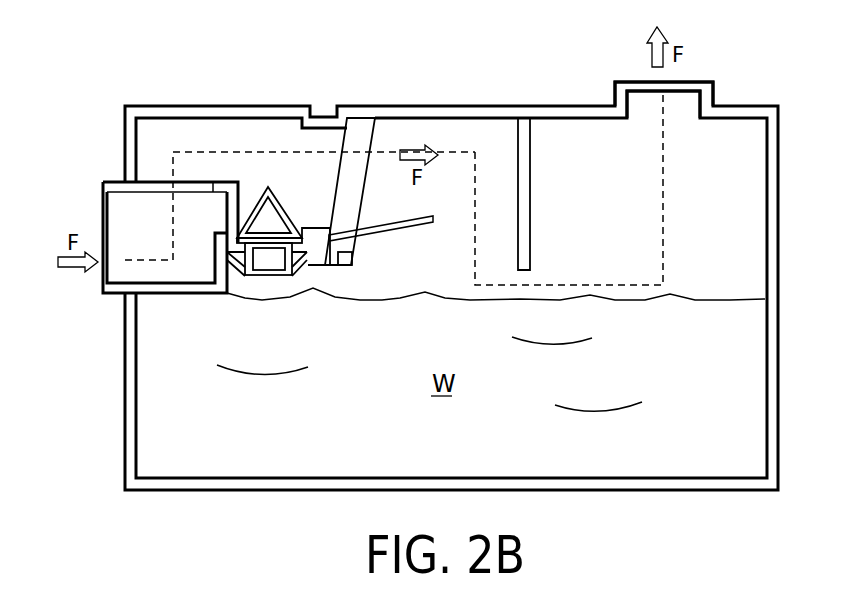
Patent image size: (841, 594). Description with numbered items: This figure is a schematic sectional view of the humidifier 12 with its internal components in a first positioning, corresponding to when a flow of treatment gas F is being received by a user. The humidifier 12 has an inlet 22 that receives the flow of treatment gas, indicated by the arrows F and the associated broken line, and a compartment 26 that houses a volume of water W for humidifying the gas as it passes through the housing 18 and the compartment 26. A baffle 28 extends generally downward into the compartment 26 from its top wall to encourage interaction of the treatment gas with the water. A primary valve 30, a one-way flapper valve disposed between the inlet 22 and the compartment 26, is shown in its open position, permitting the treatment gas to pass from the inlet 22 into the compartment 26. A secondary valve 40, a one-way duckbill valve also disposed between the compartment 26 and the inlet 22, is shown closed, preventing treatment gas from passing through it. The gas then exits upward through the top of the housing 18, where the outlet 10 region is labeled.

The gas outlet 10 is at (689, 74).
The humidifier 12 is at (165, 75).
The housing 18 is at (420, 105).
The inlet 22 is at (101, 223).
The compartment 26 is at (457, 273).
The baffle 28 is at (532, 193).
The primary valve 30 is at (377, 244).
The secondary valve 40 is at (293, 214).